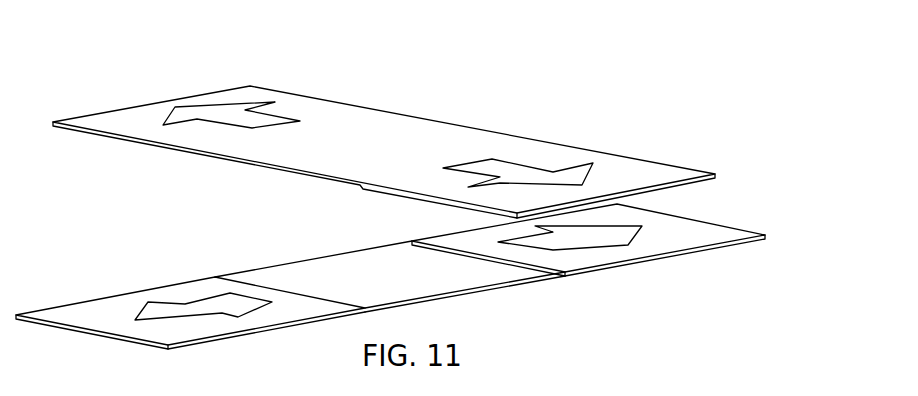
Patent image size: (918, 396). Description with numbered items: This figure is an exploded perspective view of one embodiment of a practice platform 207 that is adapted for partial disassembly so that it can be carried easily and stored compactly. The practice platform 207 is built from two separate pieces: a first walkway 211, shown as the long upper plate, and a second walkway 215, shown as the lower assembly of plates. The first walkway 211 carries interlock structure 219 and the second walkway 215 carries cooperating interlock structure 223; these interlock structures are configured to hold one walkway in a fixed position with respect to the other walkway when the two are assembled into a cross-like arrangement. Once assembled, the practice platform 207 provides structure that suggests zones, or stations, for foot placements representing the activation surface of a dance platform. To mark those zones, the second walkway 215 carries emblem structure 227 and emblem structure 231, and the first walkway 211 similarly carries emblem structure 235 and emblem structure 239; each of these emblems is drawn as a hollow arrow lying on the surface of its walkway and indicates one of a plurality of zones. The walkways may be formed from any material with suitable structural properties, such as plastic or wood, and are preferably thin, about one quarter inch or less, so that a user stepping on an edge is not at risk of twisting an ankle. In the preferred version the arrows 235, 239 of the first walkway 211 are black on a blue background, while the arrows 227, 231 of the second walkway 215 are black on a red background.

The practice platform 207 is at (762, 150).
The first walkway 211 is at (665, 169).
The second walkway 215 is at (693, 239).
The interlock structure 219 is at (266, 185).
The interlock structure 223 is at (347, 282).
The emblem structure 227 is at (173, 313).
The emblem structure 231 is at (600, 230).
The emblem structure 235 is at (498, 180).
The emblem structure 239 is at (230, 117).